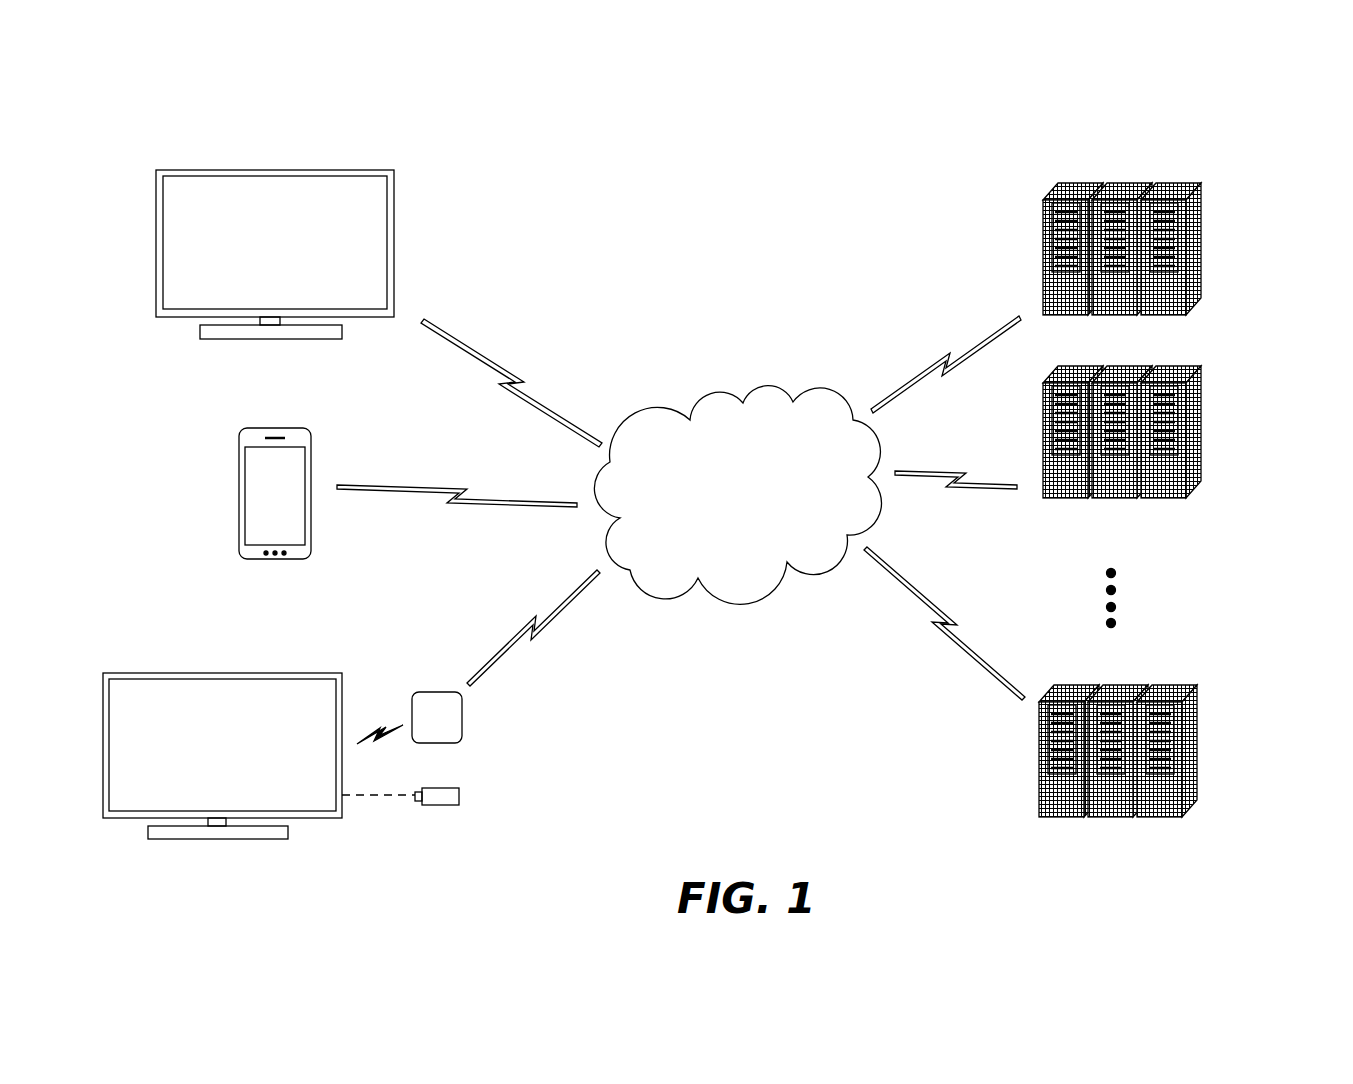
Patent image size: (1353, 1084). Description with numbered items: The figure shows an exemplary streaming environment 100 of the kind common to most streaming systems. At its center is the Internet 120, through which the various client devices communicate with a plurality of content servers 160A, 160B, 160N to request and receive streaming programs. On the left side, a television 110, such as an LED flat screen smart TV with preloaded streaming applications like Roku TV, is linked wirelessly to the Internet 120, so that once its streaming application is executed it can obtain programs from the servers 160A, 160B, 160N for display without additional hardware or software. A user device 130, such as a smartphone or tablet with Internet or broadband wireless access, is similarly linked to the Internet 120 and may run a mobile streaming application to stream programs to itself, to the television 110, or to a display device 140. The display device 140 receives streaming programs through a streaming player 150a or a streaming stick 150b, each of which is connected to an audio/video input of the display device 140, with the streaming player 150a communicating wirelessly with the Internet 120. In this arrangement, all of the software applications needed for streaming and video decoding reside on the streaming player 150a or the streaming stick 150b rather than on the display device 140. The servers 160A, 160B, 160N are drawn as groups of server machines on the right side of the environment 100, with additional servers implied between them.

The streaming environment 100 is at (1222, 150).
The television 110 is at (393, 172).
The Internet 120 is at (717, 519).
The user device 130 is at (250, 436).
The display device 140 is at (269, 841).
The streaming player 150a is at (455, 745).
The streaming stick 150b is at (452, 806).
The server 160A is at (1185, 296).
The server 160B is at (1185, 480).
The server 160N is at (1183, 791).